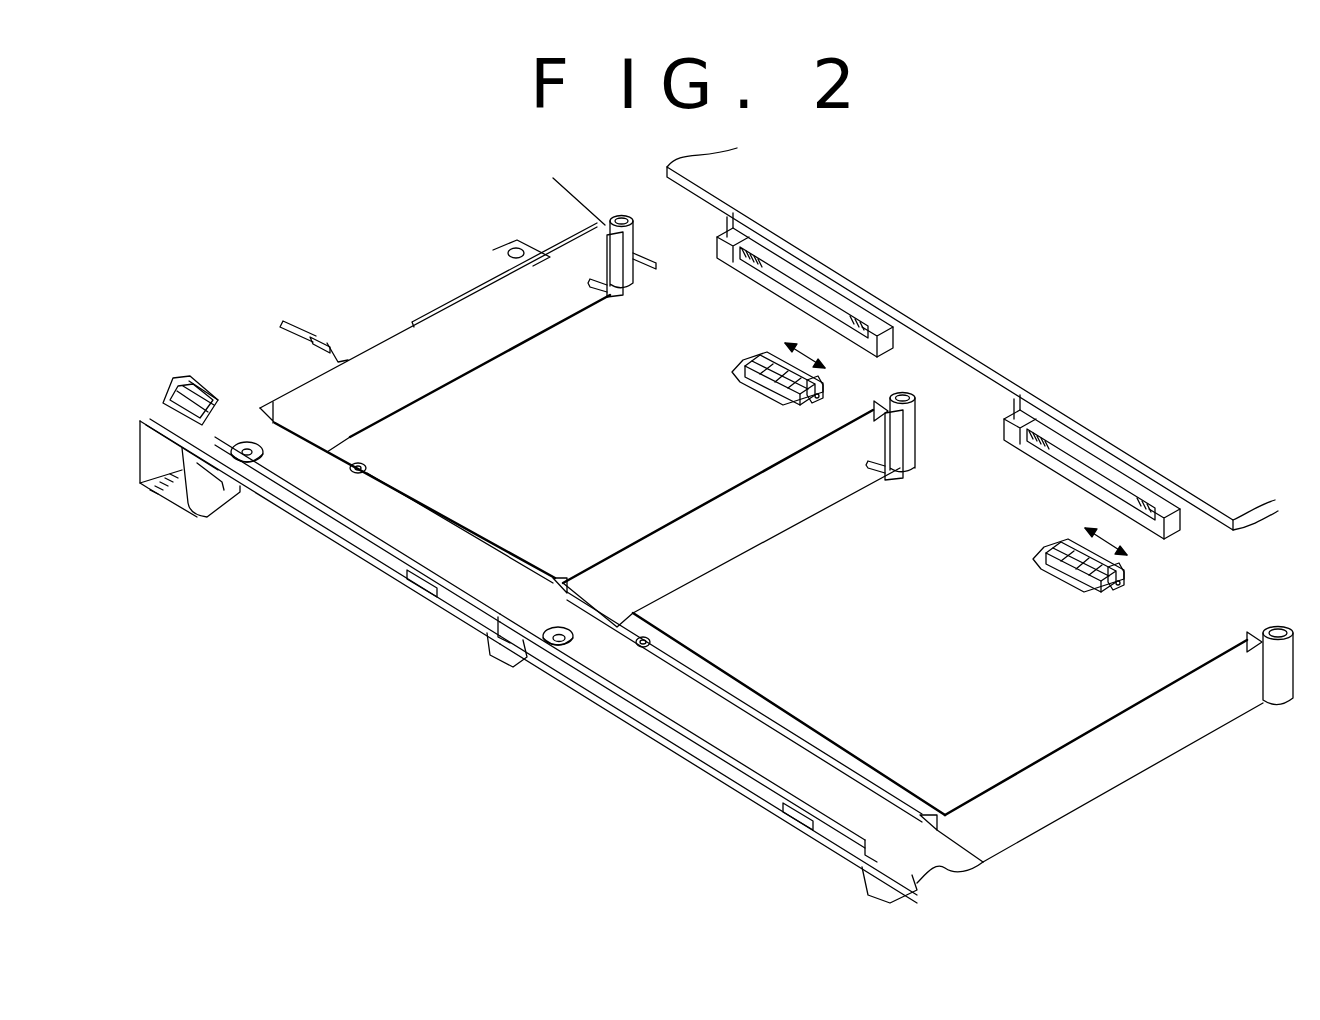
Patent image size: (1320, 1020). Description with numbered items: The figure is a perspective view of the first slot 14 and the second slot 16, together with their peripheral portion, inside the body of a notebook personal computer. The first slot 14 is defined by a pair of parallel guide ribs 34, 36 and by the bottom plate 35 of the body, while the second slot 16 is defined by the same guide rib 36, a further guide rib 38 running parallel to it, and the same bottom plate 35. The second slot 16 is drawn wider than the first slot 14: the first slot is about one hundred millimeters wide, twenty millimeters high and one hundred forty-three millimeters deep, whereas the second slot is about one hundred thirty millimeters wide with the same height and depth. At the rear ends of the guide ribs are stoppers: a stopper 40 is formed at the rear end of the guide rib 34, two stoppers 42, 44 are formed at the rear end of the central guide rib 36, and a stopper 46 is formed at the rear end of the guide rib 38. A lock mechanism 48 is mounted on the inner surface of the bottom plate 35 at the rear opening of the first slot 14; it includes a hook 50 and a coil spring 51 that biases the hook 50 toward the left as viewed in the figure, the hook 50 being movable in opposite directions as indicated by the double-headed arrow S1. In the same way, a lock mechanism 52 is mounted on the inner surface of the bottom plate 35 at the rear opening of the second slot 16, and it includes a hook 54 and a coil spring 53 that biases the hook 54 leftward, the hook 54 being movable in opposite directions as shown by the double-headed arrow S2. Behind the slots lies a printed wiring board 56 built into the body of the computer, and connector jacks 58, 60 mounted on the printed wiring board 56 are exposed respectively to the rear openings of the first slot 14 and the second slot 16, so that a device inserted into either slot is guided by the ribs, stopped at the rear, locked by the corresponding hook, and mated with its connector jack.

The first slot 14 is at (357, 560).
The second slot 16 is at (683, 763).
The guide rib 34 is at (408, 363).
The bottom plate 35 is at (566, 450).
The guide rib 36 is at (668, 545).
The guide rib 38 is at (1030, 783).
The stopper 40 is at (613, 250).
The stopper 42 is at (878, 410).
The stopper 44 is at (893, 433).
The stopper 46 is at (1243, 633).
The lock mechanism 48 is at (743, 387).
The hook 50 is at (763, 357).
The coil spring 51 is at (797, 385).
The lock mechanism 52 is at (1040, 577).
The coil spring 53 is at (1100, 588).
The hook 54 is at (1061, 547).
The printed wiring board 56 is at (990, 287).
The connector jack 58 is at (747, 270).
The connector jack 60 is at (1043, 450).
The double-headed arrow S1 is at (808, 347).
The double-headed arrow S2 is at (1110, 537).